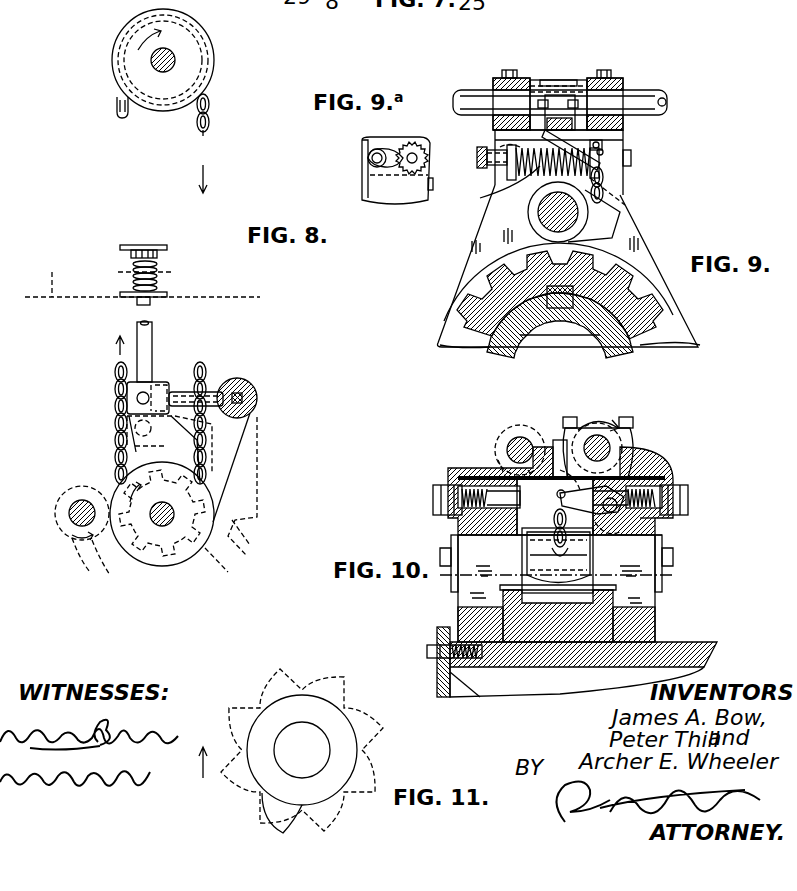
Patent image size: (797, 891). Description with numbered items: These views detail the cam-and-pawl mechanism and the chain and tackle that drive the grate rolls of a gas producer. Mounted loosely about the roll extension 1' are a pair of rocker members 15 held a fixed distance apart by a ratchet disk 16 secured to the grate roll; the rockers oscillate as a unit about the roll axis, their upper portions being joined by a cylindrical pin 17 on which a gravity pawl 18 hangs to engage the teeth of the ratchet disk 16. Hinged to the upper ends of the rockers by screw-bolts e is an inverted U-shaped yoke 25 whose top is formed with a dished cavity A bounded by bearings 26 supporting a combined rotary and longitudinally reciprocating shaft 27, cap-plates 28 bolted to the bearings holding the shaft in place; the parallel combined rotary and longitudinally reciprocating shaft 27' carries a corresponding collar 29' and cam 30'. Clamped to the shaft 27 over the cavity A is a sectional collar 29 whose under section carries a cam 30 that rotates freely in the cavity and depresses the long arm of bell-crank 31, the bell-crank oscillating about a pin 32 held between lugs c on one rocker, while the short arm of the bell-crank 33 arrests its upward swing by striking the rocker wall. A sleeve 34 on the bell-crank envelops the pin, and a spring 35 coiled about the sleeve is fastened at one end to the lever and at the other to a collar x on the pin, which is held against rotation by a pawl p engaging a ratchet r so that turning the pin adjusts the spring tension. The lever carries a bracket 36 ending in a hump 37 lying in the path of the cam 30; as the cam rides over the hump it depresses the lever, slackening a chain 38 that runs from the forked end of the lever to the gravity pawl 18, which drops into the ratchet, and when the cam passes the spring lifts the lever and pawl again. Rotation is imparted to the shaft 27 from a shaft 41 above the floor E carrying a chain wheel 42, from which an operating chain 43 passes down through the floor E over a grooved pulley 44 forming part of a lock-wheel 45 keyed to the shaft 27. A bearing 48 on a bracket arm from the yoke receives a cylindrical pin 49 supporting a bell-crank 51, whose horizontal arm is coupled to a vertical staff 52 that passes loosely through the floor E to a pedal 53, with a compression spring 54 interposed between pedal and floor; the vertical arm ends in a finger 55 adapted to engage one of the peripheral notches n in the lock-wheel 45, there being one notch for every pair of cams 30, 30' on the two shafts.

In FIG. 9, the roll extension 1' is at (574, 348).
In FIG. 10, the roll extension 1' is at (575, 645).
In FIG. 9, the rocker members 15 is at (640, 244).
In FIG. 10, the rocker members 15 is at (658, 591).
In FIG. 9, the ratchet disk 16 is at (655, 310).
In FIG. 10, the ratchet disk 16 is at (512, 630).
In FIG. 9, the cylindrical pin 17 is at (535, 221).
In FIG. 10, the cylindrical pin 17 is at (458, 580).
In FIG. 9, the gravity pawl 18 is at (615, 218).
In FIG. 10, the gravity pawl 18 is at (580, 553).
In FIG. 9, the inverted U-shaped yoke 25 is at (477, 156).
In FIG. 10, the inverted U-shaped yoke 25 is at (462, 490).
In FIG. 9, the bearings 26 is at (495, 136).
In FIG. 10, the bearings 26 is at (558, 447).
In FIG. 8, the combined rotary and longitudinally reciprocating shaft 27 is at (163, 547).
In FIG. 9, the combined rotary and longitudinally reciprocating shaft 27 is at (577, 88).
In FIG. 10, the combined rotary and longitudinally reciprocating shaft 27 is at (590, 421).
In FIG. 11, the combined rotary and longitudinally reciprocating shaft 27 is at (336, 747).
In FIG. 8, the combined rotary and longitudinally reciprocating shaft 27' is at (62, 525).
In FIG. 10, the combined rotary and longitudinally reciprocating shaft 27' is at (501, 441).
In FIG. 9, the cap-plates 28 is at (515, 78).
In FIG. 10, the cap-plates 28 is at (562, 440).
In FIG. 9, the sectional collar 29 is at (558, 83).
In FIG. 10, the sectional collar 29 is at (613, 427).
In FIG. 11, the sectional collar 29 is at (302, 729).
In FIG. 8, the collar 29' is at (68, 499).
In FIG. 10, the collar 29' is at (506, 432).
In FIG. 9, the cam 30 is at (570, 86).
In FIG. 10, the cam 30 is at (543, 490).
In FIG. 11, the cam 30 is at (303, 751).
In FIG. 8, the cam 30' is at (91, 562).
In FIG. 10, the cam 30' is at (498, 460).
In FIG. 9, the long arm of bell-crank 31 is at (605, 143).
In FIG. 10, the long arm of bell-crank 31 is at (558, 498).
In FIG. 9A, the pin 32 is at (432, 176).
In FIG. 9, the pin 32 is at (631, 158).
In FIG. 10, the pin 32 is at (655, 518).
In FIG. 10, the short arm of the bell-crank 33 is at (618, 500).
In FIG. 9, the sleeve 34 is at (520, 172).
In FIG. 9, the spring 35 is at (535, 165).
In FIG. 10, the spring 35 is at (662, 542).
In FIG. 9, the bracket 36 is at (590, 140).
In FIG. 10, the hump 37 is at (622, 491).
In FIG. 9, the chain 38 is at (606, 185).
In FIG. 10, the chain 38 is at (525, 536).
In FIG. 8, the shaft 41 is at (163, 72).
In FIG. 8, the chain wheel 42 is at (112, 58).
In FIG. 8, the operating chain 43 is at (212, 110).
In FIG. 8, the grooved pulley 44 is at (180, 558).
In FIG. 8, the lock-wheel 45 is at (135, 565).
In FIG. 8, the bearing 48 is at (257, 391).
In FIG. 8, the cylindrical pin 49 is at (240, 382).
In FIG. 8, the bell-crank 51 is at (232, 462).
In FIG. 8, the vertical staff 52 is at (146, 333).
In FIG. 8, the pedal 53 is at (125, 245).
In FIG. 8, the compression spring 54 is at (133, 278).
In FIG. 8, the finger 55 is at (241, 546).
In FIG. 10, the dished cavity A is at (638, 456).
In FIG. 8, the floor E is at (142, 274).
In FIG. 9A, the lugs c is at (368, 152).
In FIG. 9, the lugs c is at (515, 142).
In FIG. 10, the lugs c is at (620, 533).
In FIG. 10, the screw-bolts e is at (436, 498).
In FIG. 8, the peripheral notches n is at (223, 569).
In FIG. 9A, the pawl p is at (372, 172).
In FIG. 9A, the ratchet r is at (412, 142).
In FIG. 9, the ratchet r is at (482, 160).
In FIG. 9, the collar x is at (502, 184).